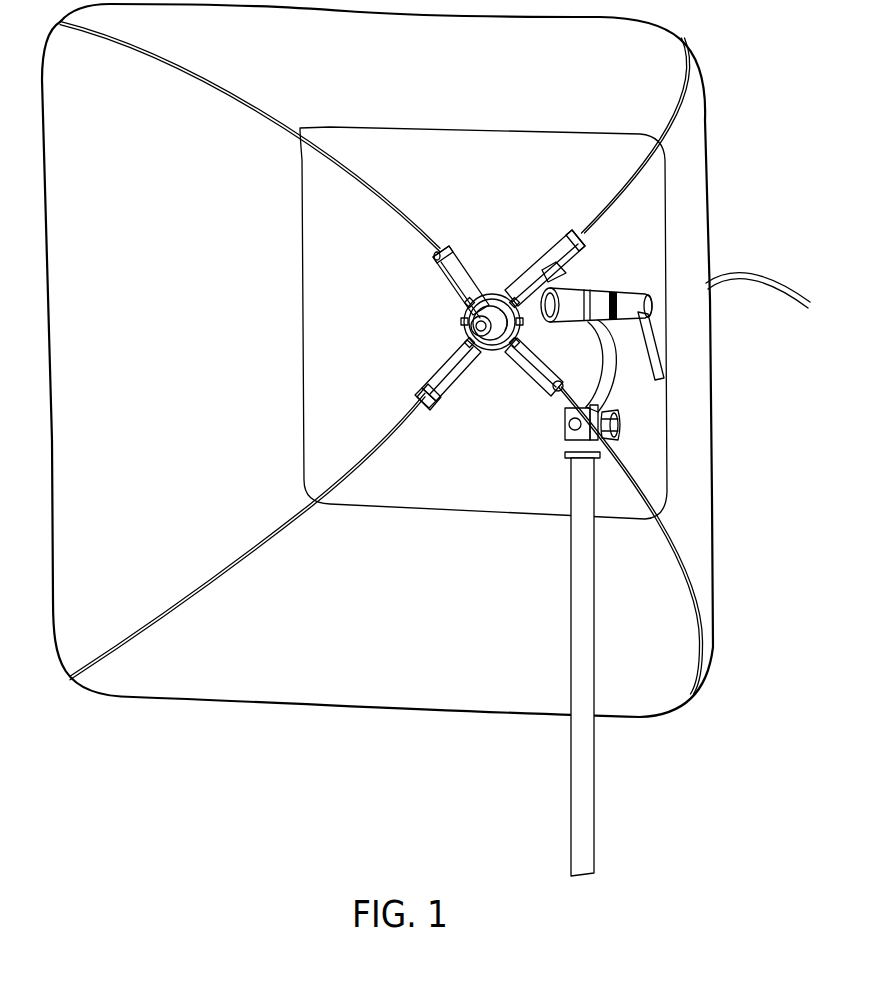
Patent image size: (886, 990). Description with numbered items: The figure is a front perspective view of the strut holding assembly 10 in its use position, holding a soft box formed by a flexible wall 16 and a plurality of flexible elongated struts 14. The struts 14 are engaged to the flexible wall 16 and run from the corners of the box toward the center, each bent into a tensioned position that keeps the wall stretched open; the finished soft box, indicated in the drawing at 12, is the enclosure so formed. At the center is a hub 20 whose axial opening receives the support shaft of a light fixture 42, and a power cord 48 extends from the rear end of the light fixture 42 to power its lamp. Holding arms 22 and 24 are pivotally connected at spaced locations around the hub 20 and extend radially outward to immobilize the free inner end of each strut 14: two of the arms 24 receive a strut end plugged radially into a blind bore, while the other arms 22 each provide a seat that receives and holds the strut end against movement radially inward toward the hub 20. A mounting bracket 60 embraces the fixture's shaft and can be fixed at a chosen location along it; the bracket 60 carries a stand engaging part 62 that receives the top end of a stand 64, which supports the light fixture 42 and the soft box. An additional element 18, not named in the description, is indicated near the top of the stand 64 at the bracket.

The strut holding assembly 10 is at (488, 275).
The softbox body 12 is at (670, 718).
The flexible elongated struts 14 is at (388, 432).
The flexible wall 16 is at (198, 347).
The mounting bracket 18 is at (560, 452).
The hub 20 is at (499, 291).
The holding arm 22 is at (455, 365).
The holding arm 24 is at (448, 272).
The light fixture 42 is at (477, 325).
The power cord 48 is at (750, 272).
The mounting bracket 60 is at (607, 377).
The stand engaging part 62 is at (585, 437).
The stand 64 is at (571, 808).